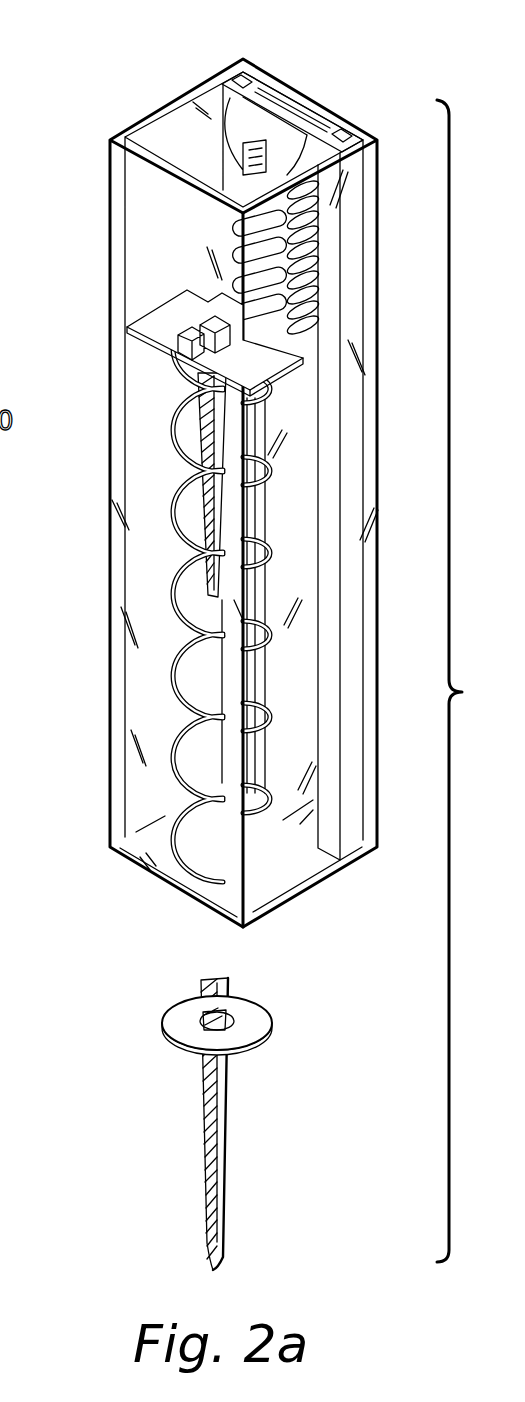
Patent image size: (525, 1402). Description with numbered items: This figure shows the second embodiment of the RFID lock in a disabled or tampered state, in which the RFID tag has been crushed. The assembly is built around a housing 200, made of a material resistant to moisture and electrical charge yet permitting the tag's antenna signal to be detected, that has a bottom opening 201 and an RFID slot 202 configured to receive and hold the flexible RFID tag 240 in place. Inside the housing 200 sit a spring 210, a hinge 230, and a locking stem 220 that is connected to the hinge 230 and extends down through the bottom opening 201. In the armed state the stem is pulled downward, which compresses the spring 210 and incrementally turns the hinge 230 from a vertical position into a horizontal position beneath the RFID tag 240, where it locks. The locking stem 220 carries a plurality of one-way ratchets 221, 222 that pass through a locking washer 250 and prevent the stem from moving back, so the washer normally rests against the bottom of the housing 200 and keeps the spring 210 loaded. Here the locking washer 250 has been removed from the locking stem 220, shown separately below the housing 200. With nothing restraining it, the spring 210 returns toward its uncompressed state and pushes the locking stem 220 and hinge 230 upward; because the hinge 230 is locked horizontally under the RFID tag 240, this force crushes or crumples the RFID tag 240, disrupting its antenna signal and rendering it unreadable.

The housing 200 is at (55, 291).
The bottom opening 201 is at (312, 903).
The RFID slot 202 is at (328, 115).
The spring 210 is at (172, 675).
The locking stem 220 is at (172, 1193).
The ratchet 221 is at (207, 1122).
The ratchet 222 is at (207, 1130).
The hinge 230 is at (125, 305).
The RFID tag 240 is at (285, 205).
The locking washer 250 is at (252, 1052).